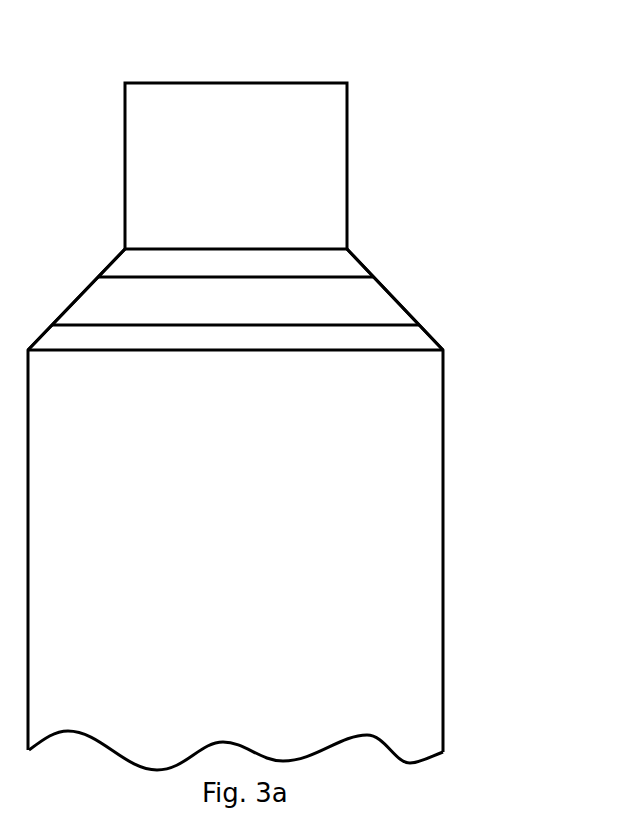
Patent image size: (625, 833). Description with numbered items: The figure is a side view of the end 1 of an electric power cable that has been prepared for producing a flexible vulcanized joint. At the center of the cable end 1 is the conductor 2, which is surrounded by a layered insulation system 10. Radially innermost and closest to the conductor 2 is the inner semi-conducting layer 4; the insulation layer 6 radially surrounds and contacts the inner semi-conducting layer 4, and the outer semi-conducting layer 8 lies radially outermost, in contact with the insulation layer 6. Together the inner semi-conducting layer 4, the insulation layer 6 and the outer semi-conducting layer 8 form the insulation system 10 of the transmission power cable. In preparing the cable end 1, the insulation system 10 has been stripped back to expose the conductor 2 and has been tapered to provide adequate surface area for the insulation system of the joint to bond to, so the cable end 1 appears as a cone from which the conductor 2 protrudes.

The cable end 1 is at (379, 111).
The conductor 2 is at (347, 165).
The inner semi-conducting layer 4 is at (343, 270).
The insulation layer 6 is at (343, 302).
The outer semi-conducting layer 8 is at (343, 332).
The insulation system 10 is at (510, 124).